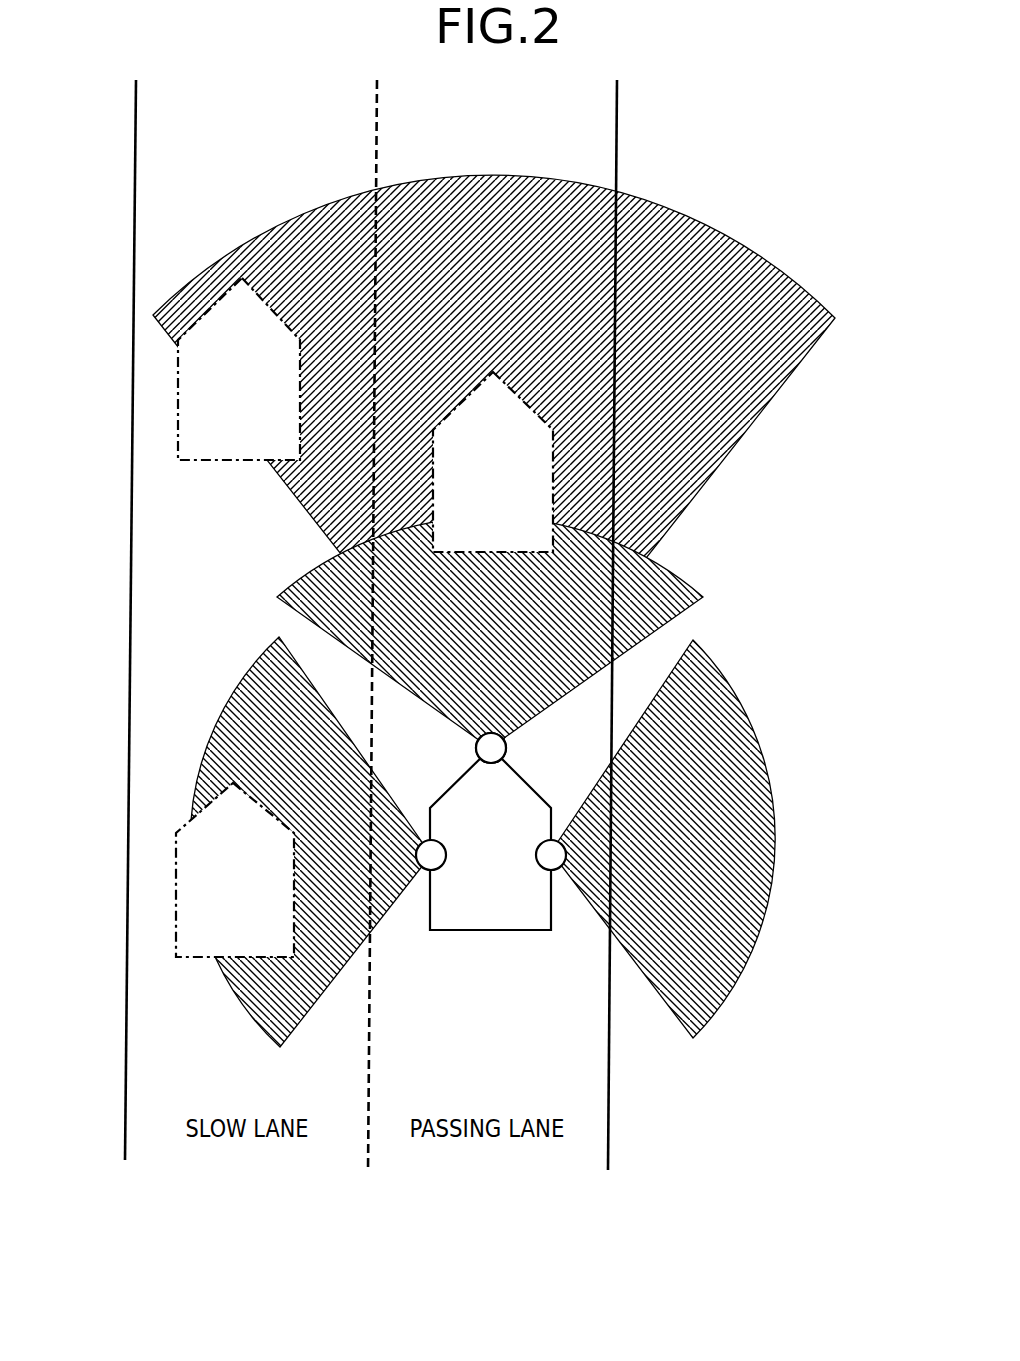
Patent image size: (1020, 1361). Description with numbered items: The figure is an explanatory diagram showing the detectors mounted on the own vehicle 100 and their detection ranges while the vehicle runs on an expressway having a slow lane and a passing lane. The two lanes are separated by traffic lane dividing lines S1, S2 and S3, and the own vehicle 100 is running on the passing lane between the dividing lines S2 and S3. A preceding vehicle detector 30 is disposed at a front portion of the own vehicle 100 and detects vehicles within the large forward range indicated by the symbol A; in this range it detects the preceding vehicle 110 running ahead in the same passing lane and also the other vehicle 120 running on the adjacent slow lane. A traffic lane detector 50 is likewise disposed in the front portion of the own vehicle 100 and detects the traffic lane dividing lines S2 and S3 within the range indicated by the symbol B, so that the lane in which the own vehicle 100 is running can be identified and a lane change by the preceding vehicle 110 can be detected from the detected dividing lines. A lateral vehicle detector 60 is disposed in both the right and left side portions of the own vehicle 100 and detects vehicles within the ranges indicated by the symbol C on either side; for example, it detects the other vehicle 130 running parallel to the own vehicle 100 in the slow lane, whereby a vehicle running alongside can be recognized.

The preceding vehicle detector 30 is at (506, 748).
The traffic lane detector 50 is at (476, 748).
The lateral vehicle detector 60 is at (545, 869).
The own vehicle 100 is at (505, 932).
The preceding vehicle 110 is at (553, 474).
The other vehicle 120 is at (218, 462).
The other vehicle 130 is at (213, 960).
The detection range of preceding vehicle detector A is at (737, 278).
The detection range of traffic lane detector B is at (675, 590).
The detection range of lateral vehicle detector C is at (258, 702).
The traffic lane dividing line S1 is at (126, 1160).
The traffic lane dividing line S2 is at (368, 1170).
The traffic lane dividing line S3 is at (608, 1170).